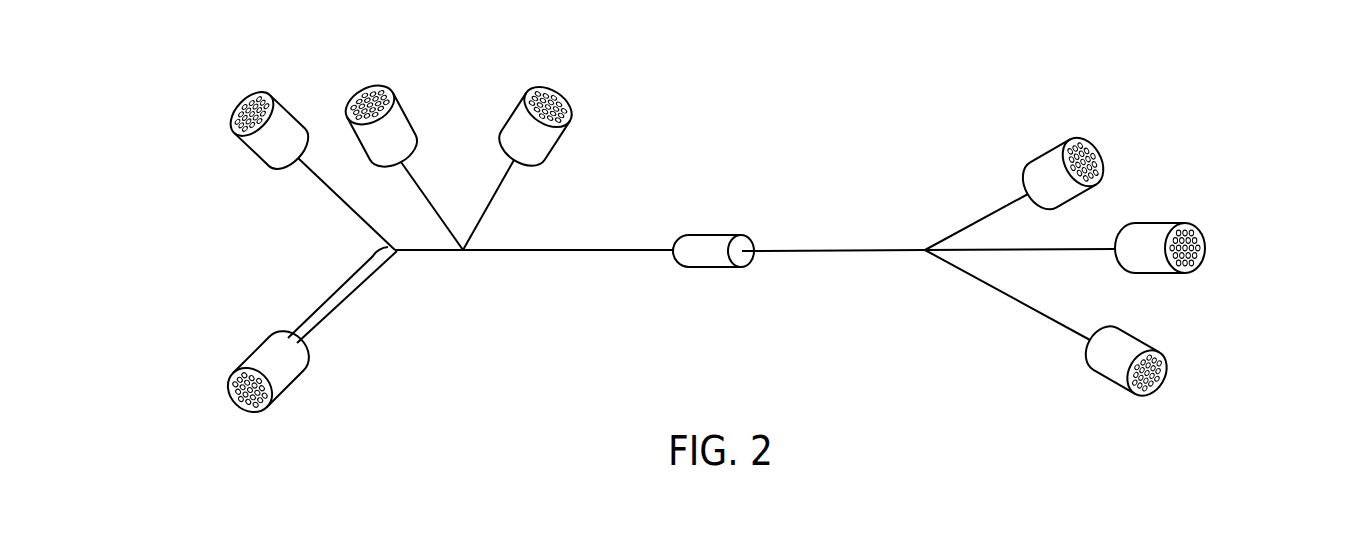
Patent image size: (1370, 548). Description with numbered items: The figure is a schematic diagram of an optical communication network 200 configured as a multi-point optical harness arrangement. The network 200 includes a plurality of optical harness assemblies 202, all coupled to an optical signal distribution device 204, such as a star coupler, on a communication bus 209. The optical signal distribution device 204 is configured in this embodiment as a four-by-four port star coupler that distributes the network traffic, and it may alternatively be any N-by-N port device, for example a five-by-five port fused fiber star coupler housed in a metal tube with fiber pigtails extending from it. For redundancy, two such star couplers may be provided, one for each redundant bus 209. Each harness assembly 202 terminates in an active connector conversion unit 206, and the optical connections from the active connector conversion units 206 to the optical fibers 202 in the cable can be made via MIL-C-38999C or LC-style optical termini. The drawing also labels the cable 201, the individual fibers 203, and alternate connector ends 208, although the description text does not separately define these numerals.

The optical communication network 200 is at (881, 71).
The dual fiber cable 201 is at (330, 287).
The optical harness assembly 202 is at (202, 215).
The optical fiber 203 is at (1037, 273).
The optical signal distribution device 204 is at (707, 235).
The active connector conversion unit 206 is at (681, 242).
The alternate connector end 208 is at (223, 229).
The communication bus 209 is at (609, 252).